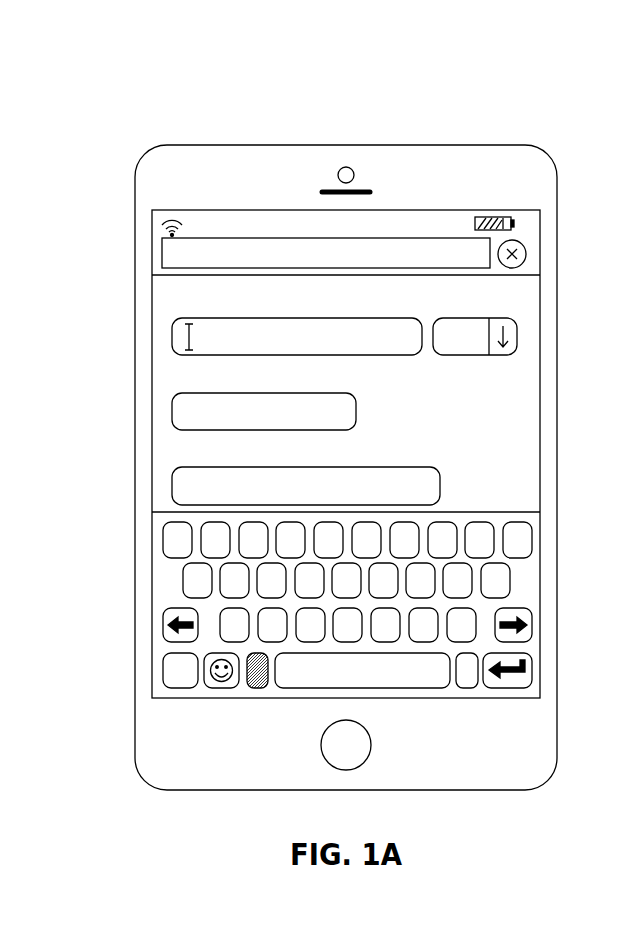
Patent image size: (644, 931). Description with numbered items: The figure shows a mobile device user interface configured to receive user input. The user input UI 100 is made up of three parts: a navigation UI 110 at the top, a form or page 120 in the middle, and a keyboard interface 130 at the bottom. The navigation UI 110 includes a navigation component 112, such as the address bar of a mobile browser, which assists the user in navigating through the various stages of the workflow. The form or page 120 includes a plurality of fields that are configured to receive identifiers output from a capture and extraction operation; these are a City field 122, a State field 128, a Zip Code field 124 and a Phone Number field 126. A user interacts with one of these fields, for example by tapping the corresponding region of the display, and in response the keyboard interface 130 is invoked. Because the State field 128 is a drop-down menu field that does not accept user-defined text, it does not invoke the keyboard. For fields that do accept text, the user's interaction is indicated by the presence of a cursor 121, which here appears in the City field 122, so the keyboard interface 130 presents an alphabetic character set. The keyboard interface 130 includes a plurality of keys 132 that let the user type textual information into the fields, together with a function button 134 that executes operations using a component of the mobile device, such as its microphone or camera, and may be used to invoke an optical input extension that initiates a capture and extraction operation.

The user input UI 100 is at (367, 119).
The navigation UI 110 is at (537, 238).
The navigation component 112 is at (162, 250).
The form or page 120 is at (538, 440).
The cursor 121 is at (176, 341).
The City field 122 is at (181, 323).
The Zip Code field 124 is at (172, 411).
The Phone Number field 126 is at (172, 488).
The State field 128 is at (517, 328).
The keyboard interface 130 is at (538, 590).
The keys 132 is at (163, 540).
The function button 134 is at (257, 688).